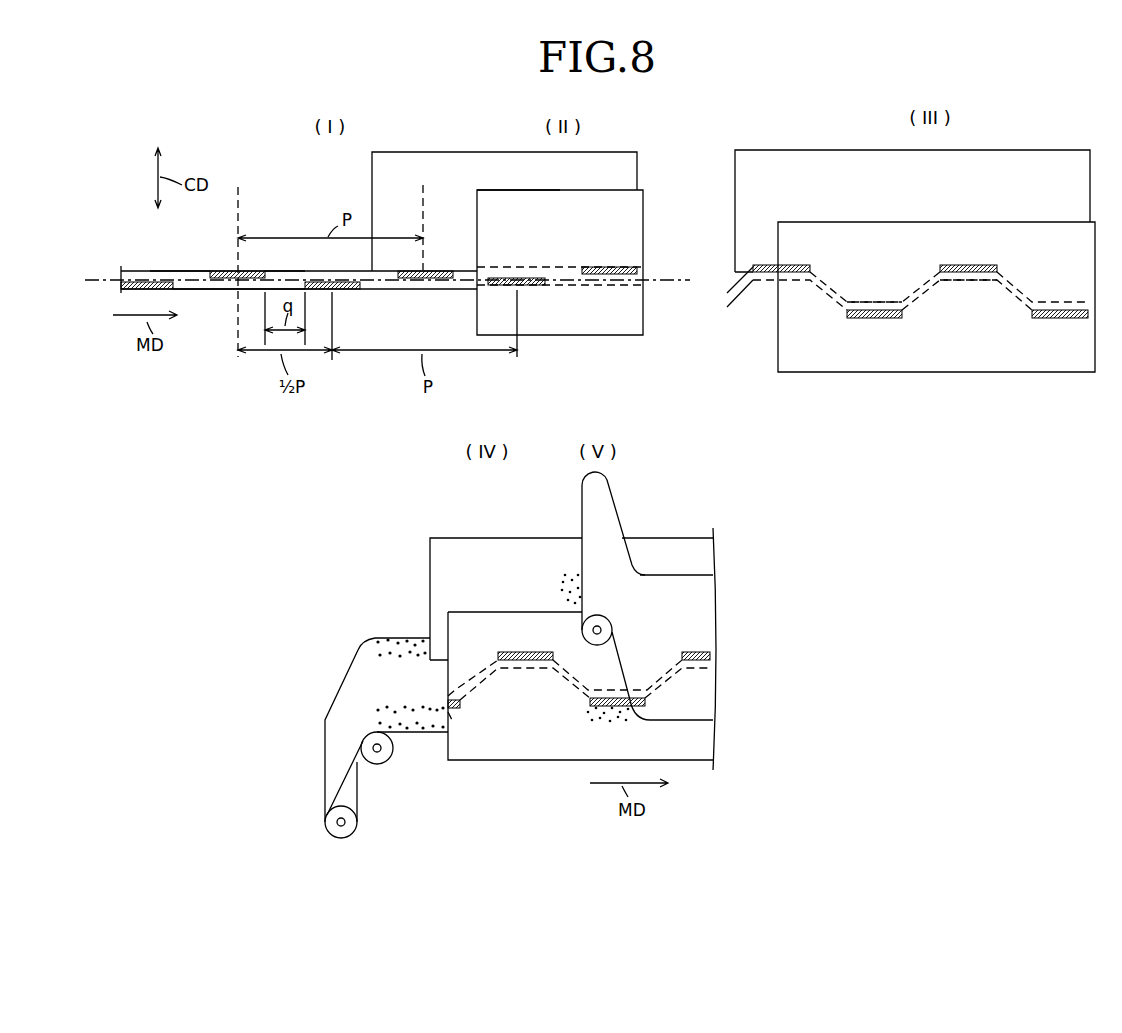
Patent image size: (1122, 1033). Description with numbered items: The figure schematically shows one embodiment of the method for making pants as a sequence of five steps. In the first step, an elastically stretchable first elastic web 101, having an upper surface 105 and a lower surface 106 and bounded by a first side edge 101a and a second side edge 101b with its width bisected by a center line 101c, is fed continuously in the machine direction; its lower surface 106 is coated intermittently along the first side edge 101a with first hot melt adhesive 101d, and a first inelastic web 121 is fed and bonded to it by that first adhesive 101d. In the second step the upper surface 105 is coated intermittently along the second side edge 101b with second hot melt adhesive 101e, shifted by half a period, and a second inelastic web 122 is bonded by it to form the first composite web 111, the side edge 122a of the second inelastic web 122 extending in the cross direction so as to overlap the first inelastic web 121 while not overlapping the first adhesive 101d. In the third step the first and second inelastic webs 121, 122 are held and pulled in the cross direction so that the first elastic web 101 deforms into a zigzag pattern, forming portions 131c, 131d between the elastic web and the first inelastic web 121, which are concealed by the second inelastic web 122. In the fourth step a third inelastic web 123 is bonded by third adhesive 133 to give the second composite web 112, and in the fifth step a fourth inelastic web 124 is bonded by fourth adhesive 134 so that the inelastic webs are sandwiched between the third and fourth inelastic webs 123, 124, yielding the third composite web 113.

The first elastic web 101 is at (137, 260).
The first side edge 101a is at (338, 270).
The second side edge 101b is at (438, 282).
The center line 101c is at (99, 283).
The first hot melt adhesive 101d is at (219, 268).
The second hot melt adhesive 101e is at (350, 283).
The upper surface 105 is at (171, 271).
The lower surface 106 is at (197, 285).
The first composite web 111 is at (634, 354).
The second composite web 112 is at (514, 781).
The third composite web 113 is at (692, 520).
The first inelastic web 121 is at (400, 167).
The second inelastic web 122 is at (553, 330).
The side edge 122a is at (545, 203).
The third inelastic web 123 is at (353, 701).
The fourth inelastic web 124 is at (615, 517).
The portion corresponding to aperture 131c is at (965, 300).
The portion corresponding to aperture 131d is at (872, 295).
The third adhesive 133 is at (397, 645).
The fourth adhesive 134 is at (567, 598).